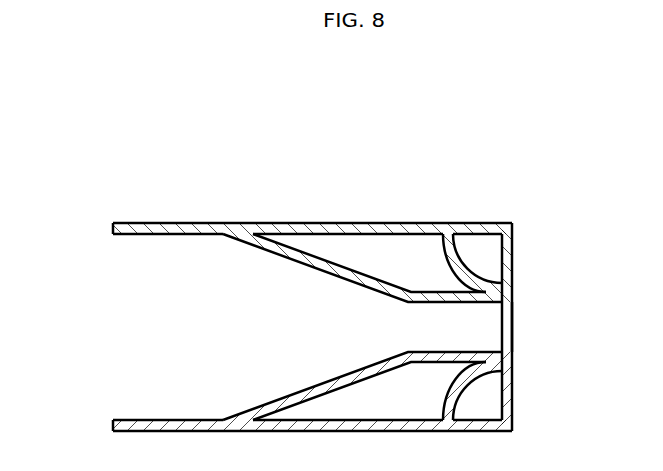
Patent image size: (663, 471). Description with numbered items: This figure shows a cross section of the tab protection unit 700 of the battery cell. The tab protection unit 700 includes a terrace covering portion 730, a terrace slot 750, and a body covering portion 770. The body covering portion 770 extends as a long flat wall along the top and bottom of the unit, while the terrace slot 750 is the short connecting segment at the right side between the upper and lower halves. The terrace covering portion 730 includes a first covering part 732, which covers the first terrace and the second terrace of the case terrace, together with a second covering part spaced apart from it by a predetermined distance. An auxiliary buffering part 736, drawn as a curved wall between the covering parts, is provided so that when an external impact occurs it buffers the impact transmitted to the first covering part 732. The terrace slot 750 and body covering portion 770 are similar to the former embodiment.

The tab protection unit 700 is at (357, 249).
The body covering portion 770 is at (163, 223).
The first covering part 732 is at (330, 267).
The auxiliary buffering part 736 is at (466, 261).
The terrace slot 750 is at (518, 327).
The terrace covering portion 730 is at (523, 382).